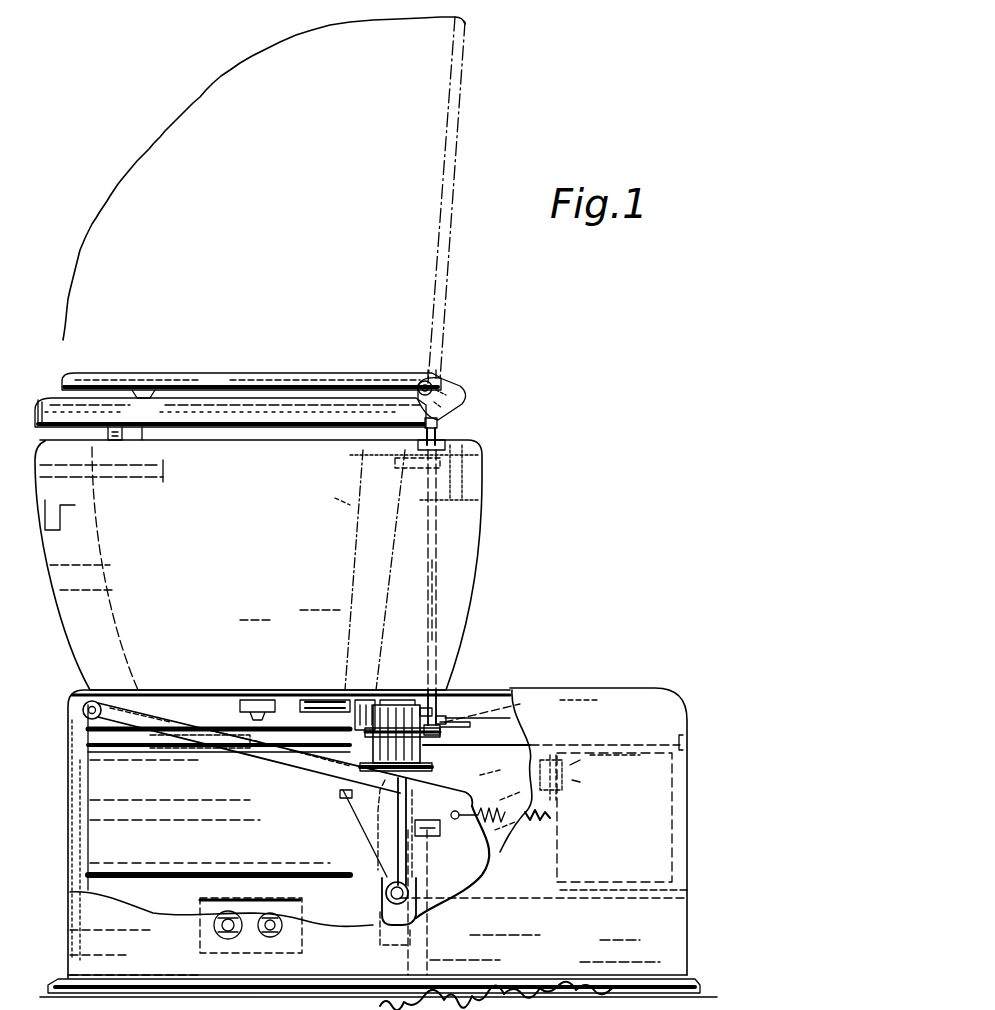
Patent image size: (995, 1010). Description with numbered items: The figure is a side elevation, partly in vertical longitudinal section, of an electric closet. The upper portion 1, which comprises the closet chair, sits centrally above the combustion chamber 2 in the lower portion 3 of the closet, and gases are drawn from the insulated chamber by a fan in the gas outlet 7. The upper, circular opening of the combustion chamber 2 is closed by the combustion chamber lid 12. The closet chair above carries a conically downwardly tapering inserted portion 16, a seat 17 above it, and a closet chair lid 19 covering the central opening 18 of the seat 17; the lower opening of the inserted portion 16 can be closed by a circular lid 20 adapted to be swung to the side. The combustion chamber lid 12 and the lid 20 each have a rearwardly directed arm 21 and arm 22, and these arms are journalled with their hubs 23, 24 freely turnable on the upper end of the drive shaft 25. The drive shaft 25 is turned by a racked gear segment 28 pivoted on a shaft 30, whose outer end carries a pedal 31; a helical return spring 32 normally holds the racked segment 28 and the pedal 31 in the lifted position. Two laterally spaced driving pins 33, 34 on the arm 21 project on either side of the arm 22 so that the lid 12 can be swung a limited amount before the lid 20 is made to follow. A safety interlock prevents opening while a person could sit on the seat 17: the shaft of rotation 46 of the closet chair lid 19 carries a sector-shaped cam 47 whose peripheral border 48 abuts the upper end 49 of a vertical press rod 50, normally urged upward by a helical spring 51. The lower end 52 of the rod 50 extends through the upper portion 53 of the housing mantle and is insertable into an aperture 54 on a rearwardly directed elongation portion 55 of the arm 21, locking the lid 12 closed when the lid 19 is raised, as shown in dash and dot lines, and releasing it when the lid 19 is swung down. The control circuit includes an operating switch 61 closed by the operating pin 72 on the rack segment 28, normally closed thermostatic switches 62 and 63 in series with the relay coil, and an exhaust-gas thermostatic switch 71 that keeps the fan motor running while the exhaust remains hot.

The upper portion 1 is at (465, 558).
The combustion chamber 2 is at (100, 795).
The lower portion 3 is at (677, 705).
The gas outlet 7 is at (677, 890).
The combustion chamber lid 12 is at (228, 728).
The inserted portion 16 is at (130, 414).
The seat 17 is at (63, 410).
The central opening 18 is at (213, 414).
The closet chair lid 19 is at (455, 165).
The circular lid 20 is at (258, 710).
The arm 21 is at (340, 760).
The arm 22 is at (362, 700).
The hub 23 is at (425, 758).
The hub 24 is at (437, 718).
The drive shaft 25 is at (478, 790).
The racked gear segment 28 is at (375, 822).
The shaft 30 is at (388, 920).
The pedal 31 is at (90, 702).
The helical return spring 32 is at (505, 816).
The driving pin 33 is at (338, 692).
The driving pin 34 is at (400, 688).
The shaft of rotation 46 is at (437, 382).
The sector-shaped cam 47 is at (452, 390).
The peripheral border 48 is at (462, 402).
The upper end 49 is at (440, 422).
The vertical press rod 50 is at (432, 600).
The helical spring 51 is at (462, 451).
The lower end 52 is at (445, 722).
The upper portion 53 is at (430, 712).
The aperture 54 is at (503, 720).
The elongation portion 55 is at (503, 742).
The operating switch 61 is at (440, 835).
The thermostatic switch 62 is at (205, 950).
The thermostatic switch 63 is at (295, 950).
The thermostatic switch 71 is at (572, 775).
The operating pin 72 is at (497, 840).